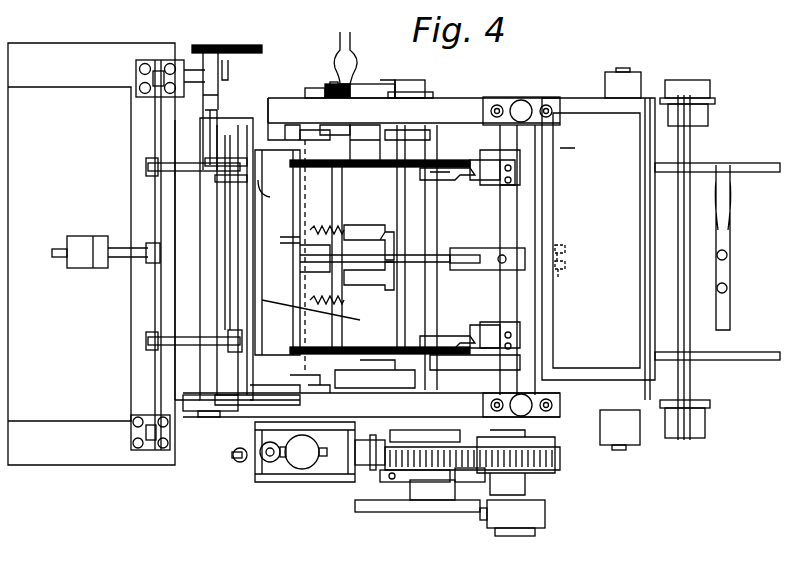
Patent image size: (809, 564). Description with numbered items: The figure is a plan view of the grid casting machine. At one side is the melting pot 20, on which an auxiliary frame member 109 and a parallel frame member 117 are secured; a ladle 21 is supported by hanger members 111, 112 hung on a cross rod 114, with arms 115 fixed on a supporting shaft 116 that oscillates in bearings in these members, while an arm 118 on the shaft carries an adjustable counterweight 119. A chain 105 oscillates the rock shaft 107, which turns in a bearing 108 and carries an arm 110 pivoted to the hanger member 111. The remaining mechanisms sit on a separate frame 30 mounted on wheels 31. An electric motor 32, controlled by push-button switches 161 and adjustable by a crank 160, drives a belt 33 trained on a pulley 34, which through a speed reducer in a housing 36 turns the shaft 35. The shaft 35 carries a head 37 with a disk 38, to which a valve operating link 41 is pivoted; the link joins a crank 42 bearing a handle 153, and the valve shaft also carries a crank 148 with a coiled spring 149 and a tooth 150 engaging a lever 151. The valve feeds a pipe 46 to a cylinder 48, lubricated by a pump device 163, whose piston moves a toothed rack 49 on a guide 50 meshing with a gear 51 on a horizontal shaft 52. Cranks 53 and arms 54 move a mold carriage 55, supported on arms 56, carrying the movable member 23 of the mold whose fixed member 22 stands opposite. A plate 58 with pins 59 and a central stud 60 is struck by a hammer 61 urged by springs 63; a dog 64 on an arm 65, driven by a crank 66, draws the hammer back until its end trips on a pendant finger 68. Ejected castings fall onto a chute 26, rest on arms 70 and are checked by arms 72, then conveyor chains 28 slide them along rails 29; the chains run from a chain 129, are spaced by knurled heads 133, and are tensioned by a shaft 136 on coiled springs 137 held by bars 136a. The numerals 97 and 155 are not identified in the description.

The melting pot 20 is at (45, 100).
The ladle 21 is at (228, 288).
The fixed member 22 is at (236, 392).
The movable member 23 is at (315, 314).
The chute 26 is at (540, 313).
The conveyor chains 28 is at (445, 170).
The rails 29 is at (755, 172).
The frame 30 is at (478, 102).
The wheels 31 is at (712, 91).
The electric motor 32 is at (553, 475).
The belt 33 is at (487, 516).
The pulley 34 is at (398, 512).
The shaft 35 is at (398, 185).
The housing 36 is at (378, 482).
The head 37 is at (305, 81).
The disk 38 is at (326, 86).
The valve operating link 41 is at (360, 84).
The crank 42 is at (410, 84).
The pipe 46 is at (238, 462).
The cylinder 48 is at (328, 465).
The toothed rack 49 is at (412, 482).
The guide 50 is at (487, 478).
The gear 51 is at (560, 458).
The horizontal shaft 52 is at (510, 210).
The cranks 53 is at (520, 148).
The arms 54 is at (440, 165).
The mold carriage 55 is at (335, 200).
The arms 56 is at (296, 125).
The plate 58 is at (278, 262).
The pins 59 is at (265, 183).
The stud 60 is at (295, 245).
The hammer 61 is at (369, 242).
The springs 63 is at (342, 232).
The dog 64 is at (344, 276).
The arm 65 is at (440, 262).
The crank 66 is at (482, 240).
The pendant finger 68 is at (566, 258).
The arms 70 is at (350, 181).
The arms 72 is at (318, 404).
The block 97 is at (372, 388).
The chain 105 is at (210, 45).
The rock shaft 107 is at (208, 143).
The bearing 108 is at (218, 70).
The auxiliary frame member 109 is at (136, 76).
The arm 110 is at (212, 158).
The hanger member 111 is at (230, 183).
The hanger member 112 is at (228, 334).
The cross rod 114 is at (236, 232).
The arms 115 is at (150, 345).
The supporting shaft 116 is at (155, 312).
The frame member 117 is at (131, 438).
The arm 118 is at (60, 250).
The counterweight 119 is at (80, 240).
The chain 129 is at (388, 130).
The knurled heads 133 is at (334, 82).
The shaft 136 is at (437, 213).
The bars 136a is at (485, 106).
The coiled springs 137 is at (430, 386).
The crank 148 is at (330, 128).
The coiled spring 149 is at (366, 142).
The tooth 150 is at (420, 96).
The lever 151 is at (372, 90).
The handle 153 is at (344, 28).
The plate 155 is at (420, 432).
The crank 160 is at (436, 494).
The switches 161 is at (644, 62).
The pump device 163 is at (302, 462).